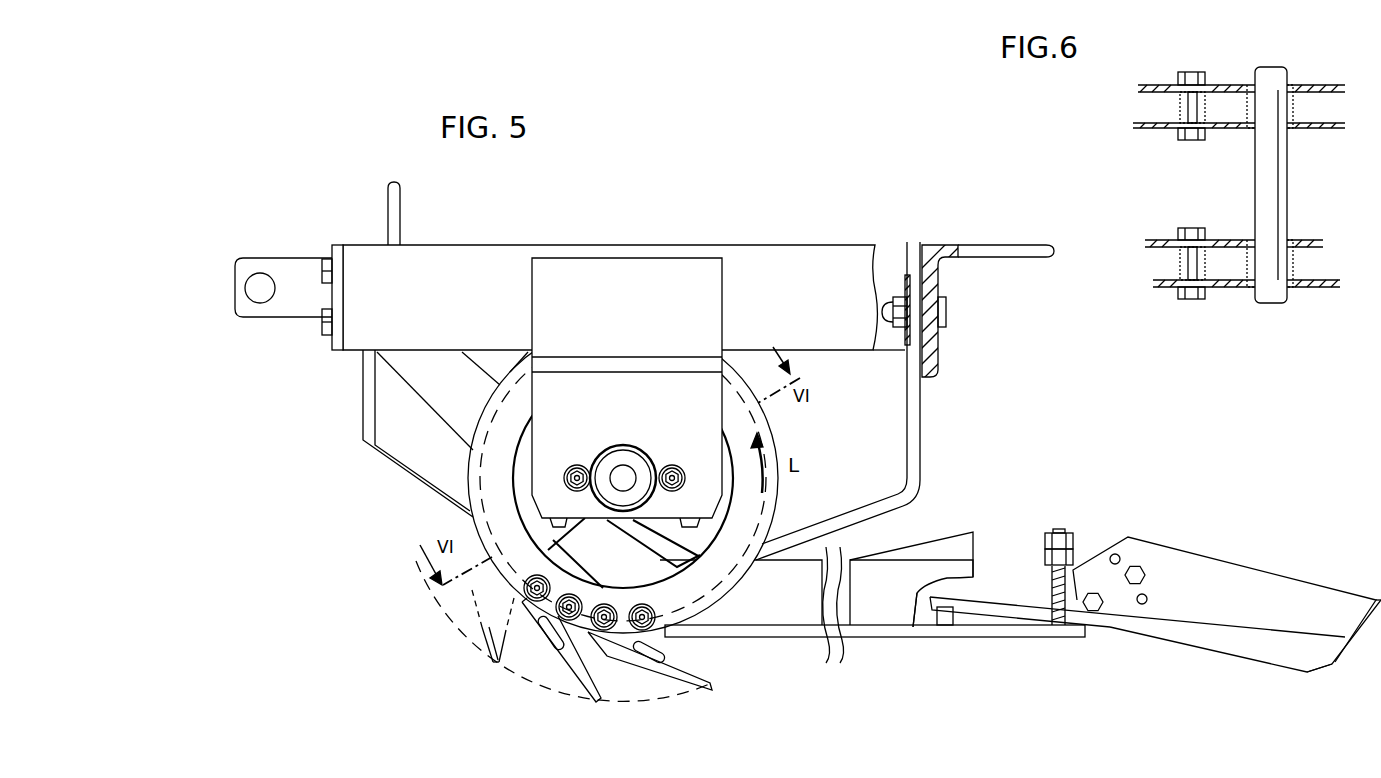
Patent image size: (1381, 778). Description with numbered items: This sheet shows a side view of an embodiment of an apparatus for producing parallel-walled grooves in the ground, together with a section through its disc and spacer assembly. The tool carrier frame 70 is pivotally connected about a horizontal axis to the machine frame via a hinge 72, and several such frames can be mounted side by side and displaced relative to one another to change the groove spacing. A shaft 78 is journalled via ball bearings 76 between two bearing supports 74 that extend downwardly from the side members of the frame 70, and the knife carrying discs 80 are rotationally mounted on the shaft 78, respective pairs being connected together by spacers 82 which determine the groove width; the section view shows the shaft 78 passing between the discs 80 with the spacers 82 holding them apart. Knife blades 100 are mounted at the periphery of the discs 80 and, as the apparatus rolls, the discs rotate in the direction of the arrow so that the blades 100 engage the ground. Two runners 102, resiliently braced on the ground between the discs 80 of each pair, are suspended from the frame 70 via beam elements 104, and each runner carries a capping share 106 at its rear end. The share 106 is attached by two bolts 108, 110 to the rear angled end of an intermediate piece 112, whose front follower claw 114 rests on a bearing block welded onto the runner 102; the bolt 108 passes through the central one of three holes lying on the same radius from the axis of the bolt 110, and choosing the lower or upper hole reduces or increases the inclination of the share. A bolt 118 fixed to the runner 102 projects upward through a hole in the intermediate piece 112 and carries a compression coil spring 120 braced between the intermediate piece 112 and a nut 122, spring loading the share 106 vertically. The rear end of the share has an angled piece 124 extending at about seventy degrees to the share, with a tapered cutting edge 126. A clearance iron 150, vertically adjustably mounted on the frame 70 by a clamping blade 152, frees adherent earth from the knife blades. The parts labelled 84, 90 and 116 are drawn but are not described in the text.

In FIG. 5, the tool carrier frame 70 is at (793, 260).
In FIG. 5, the hinge 72 is at (266, 293).
In FIG. 5, the bearing supports 74 is at (601, 408).
In FIG. 5, the ball bearings 76 is at (633, 457).
In FIG. 5, the shaft 78 is at (616, 477).
In FIG. 6, the shaft 78 is at (1273, 177).
In FIG. 5, the knife carrying discs 80 is at (780, 497).
In FIG. 6, the knife carrying discs 80 is at (1316, 120).
In FIG. 6, the spacers 82 is at (1177, 108).
In FIG. 5, the angle plate 84 is at (940, 250).
In FIG. 5, the arm 90 is at (1018, 256).
In FIG. 5, the knife blades 100 is at (480, 625).
In FIG. 5, the runners 102 is at (847, 637).
In FIG. 5, the beam elements 104 is at (430, 388).
In FIG. 5, the capping share 106 is at (1222, 566).
In FIG. 5, the bolt 108 is at (1146, 578).
In FIG. 5, the bolt 110 is at (1096, 612).
In FIG. 5, the intermediate piece 112 is at (979, 598).
In FIG. 5, the front follower claw 114 is at (912, 610).
In FIG. 5, the spacer block 116 is at (956, 620).
In FIG. 5, the bolt 118 is at (1056, 597).
In FIG. 5, the compression coil spring 120 is at (1070, 566).
In FIG. 5, the nut 122 is at (1050, 560).
In FIG. 5, the angled piece 124 is at (1374, 600).
In FIG. 5, the cutting edge 126 is at (1312, 666).
In FIG. 5, the clearance iron 150 is at (920, 480).
In FIG. 5, the clamping blade 152 is at (905, 342).